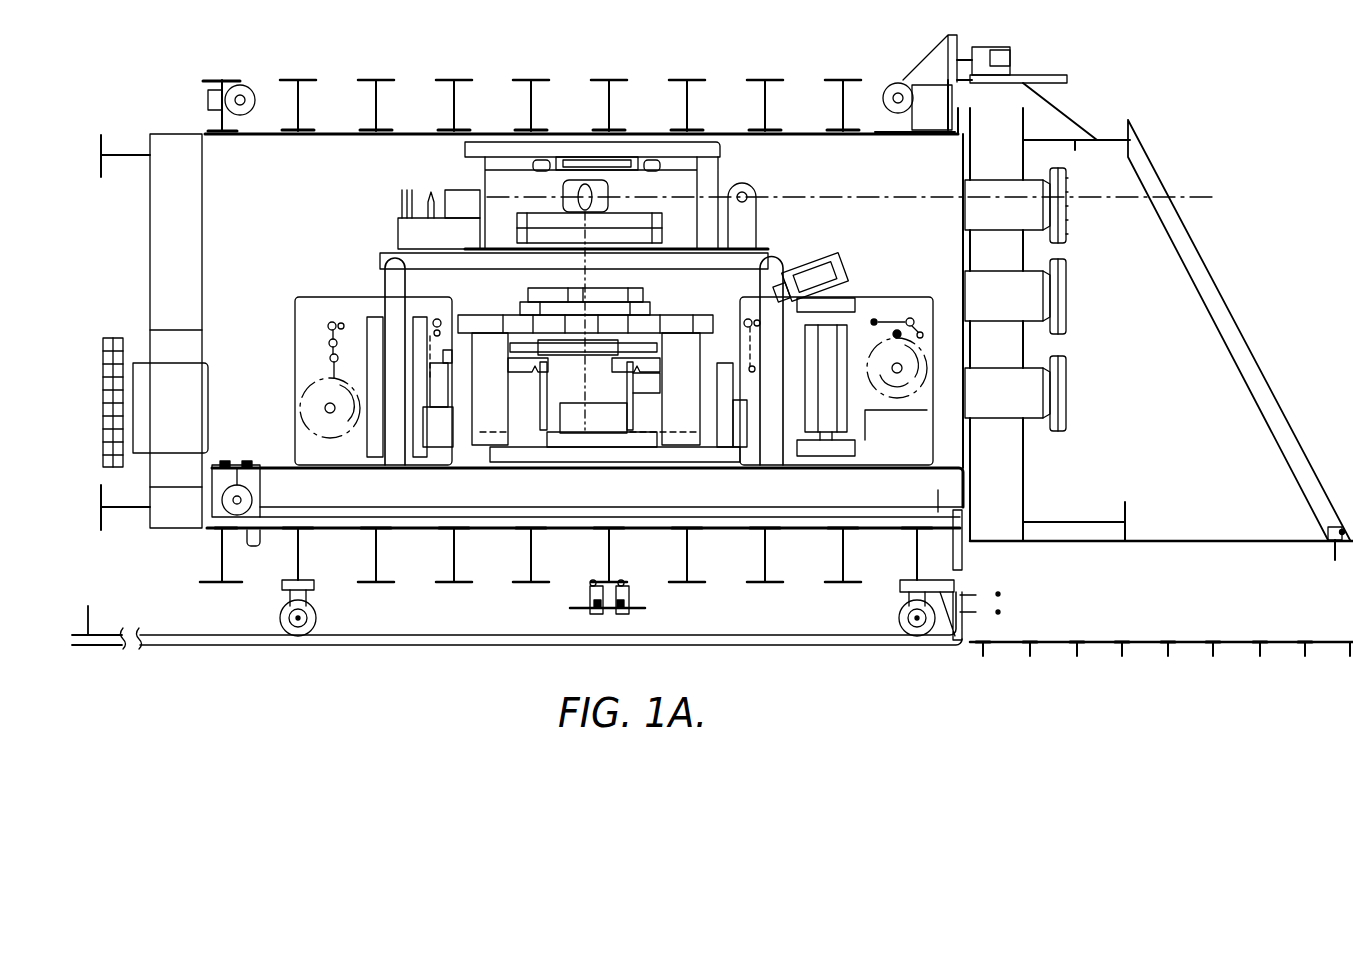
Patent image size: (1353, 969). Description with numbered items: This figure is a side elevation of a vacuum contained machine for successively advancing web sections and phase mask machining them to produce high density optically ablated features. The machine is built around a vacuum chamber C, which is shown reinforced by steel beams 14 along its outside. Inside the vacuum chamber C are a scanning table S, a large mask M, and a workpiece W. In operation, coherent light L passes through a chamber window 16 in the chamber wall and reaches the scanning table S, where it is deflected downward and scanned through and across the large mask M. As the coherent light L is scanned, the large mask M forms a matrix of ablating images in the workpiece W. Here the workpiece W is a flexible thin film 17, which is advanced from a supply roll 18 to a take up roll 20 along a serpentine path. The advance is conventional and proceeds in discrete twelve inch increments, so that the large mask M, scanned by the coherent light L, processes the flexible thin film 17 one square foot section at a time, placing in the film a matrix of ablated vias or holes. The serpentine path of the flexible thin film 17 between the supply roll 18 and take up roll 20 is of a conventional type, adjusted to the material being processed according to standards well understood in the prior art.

The steel beams 14 is at (305, 78).
The chamber window 16 is at (1064, 195).
The flexible thin film 17 is at (657, 445).
The supply roll 18 is at (897, 333).
The take up roll 20 is at (311, 393).
The scanning table S is at (710, 137).
The vacuum chamber C is at (267, 214).
The workpiece W is at (526, 430).
The large mask M is at (612, 373).
The coherent light L is at (1218, 198).